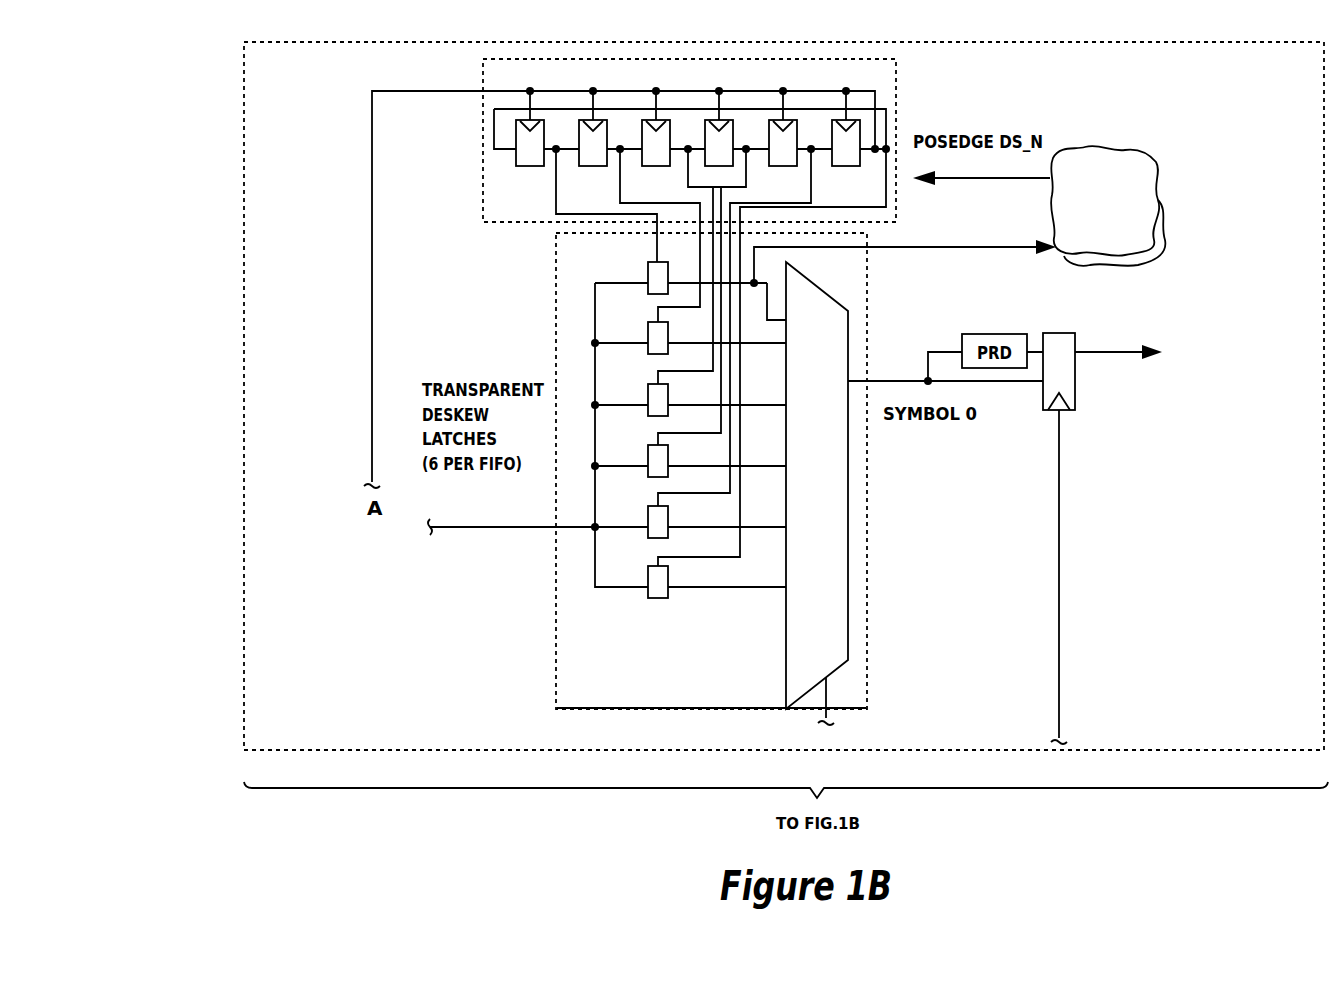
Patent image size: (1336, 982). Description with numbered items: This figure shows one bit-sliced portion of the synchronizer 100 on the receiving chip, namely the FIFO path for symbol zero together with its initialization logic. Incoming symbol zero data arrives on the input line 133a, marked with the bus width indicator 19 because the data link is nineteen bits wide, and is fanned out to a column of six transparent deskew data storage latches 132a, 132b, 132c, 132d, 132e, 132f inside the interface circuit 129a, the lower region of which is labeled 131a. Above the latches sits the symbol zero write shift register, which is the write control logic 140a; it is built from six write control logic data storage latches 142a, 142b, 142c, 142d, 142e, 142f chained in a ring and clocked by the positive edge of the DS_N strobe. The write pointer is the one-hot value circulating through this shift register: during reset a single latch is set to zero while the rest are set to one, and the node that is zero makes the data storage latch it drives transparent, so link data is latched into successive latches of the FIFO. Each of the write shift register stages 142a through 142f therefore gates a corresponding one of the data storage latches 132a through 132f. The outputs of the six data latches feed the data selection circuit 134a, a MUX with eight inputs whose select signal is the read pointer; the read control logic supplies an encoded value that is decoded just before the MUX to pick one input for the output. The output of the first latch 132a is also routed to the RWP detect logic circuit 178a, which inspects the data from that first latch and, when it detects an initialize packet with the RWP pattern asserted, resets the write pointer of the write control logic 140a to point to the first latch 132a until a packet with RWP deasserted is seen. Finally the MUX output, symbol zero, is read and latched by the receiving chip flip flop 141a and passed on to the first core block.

The synchronizer 100 is at (236, 200).
The write control logic 140a is at (539, 223).
The write control logic data storage latch 142a is at (528, 158).
The write control logic data storage latch 142b is at (597, 162).
The write control logic data storage latch 142c is at (663, 158).
The write control logic data storage latch 142d is at (727, 157).
The write control logic data storage latch 142e is at (792, 160).
The write control logic data storage latch 142f is at (857, 158).
The RWP detect logic circuit 178a is at (1137, 170).
The interface circuit 129a is at (558, 693).
The read side block 131a is at (711, 730).
The data storage latch 132a is at (652, 294).
The data storage latch 132b is at (652, 354).
The data storage latch 132c is at (652, 416).
The data storage latch 132d is at (652, 477).
The data storage latch 132e is at (652, 538).
The data storage latch 132f is at (652, 598).
The symbol 0 input data line 133a is at (485, 527).
The data selection circuit 134a is at (841, 449).
The receiving chip flip flop 141a is at (1063, 333).
The 19-bit bus width indicator 19 is at (451, 537).